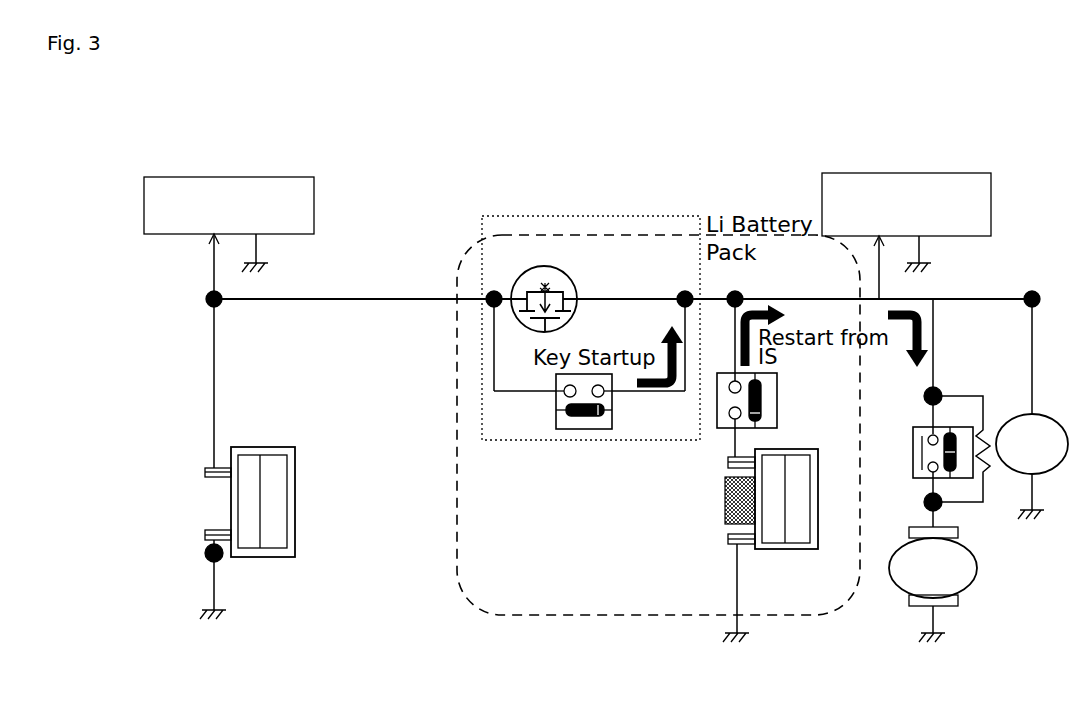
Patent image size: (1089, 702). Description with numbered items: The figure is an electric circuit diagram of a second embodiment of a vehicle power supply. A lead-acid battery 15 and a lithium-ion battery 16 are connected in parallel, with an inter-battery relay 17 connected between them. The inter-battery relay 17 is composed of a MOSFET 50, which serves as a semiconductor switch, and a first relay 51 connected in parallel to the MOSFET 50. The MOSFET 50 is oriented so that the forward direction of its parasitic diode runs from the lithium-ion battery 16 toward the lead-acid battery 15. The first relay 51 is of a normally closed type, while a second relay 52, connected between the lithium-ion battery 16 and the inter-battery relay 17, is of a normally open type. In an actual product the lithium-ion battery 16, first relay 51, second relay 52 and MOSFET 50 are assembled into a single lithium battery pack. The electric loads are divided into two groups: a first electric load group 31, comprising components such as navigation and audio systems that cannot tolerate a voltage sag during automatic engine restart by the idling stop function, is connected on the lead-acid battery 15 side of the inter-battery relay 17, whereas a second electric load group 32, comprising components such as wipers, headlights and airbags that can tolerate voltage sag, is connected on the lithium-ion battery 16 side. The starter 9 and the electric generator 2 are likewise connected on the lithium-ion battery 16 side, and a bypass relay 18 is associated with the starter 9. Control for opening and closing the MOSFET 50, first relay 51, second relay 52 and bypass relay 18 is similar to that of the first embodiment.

The electric generator 2 is at (1052, 418).
The starter 9 is at (968, 586).
The lead-acid battery 15 is at (282, 447).
The lithium-ion battery 16 is at (725, 517).
The inter-battery relay 17 is at (540, 216).
The bypass relay 18 is at (918, 427).
The first electric load group 31 is at (254, 177).
The second electric load group 32 is at (917, 173).
The MOSFET 50 is at (556, 267).
The first relay 51 is at (566, 429).
The second relay 52 is at (777, 418).